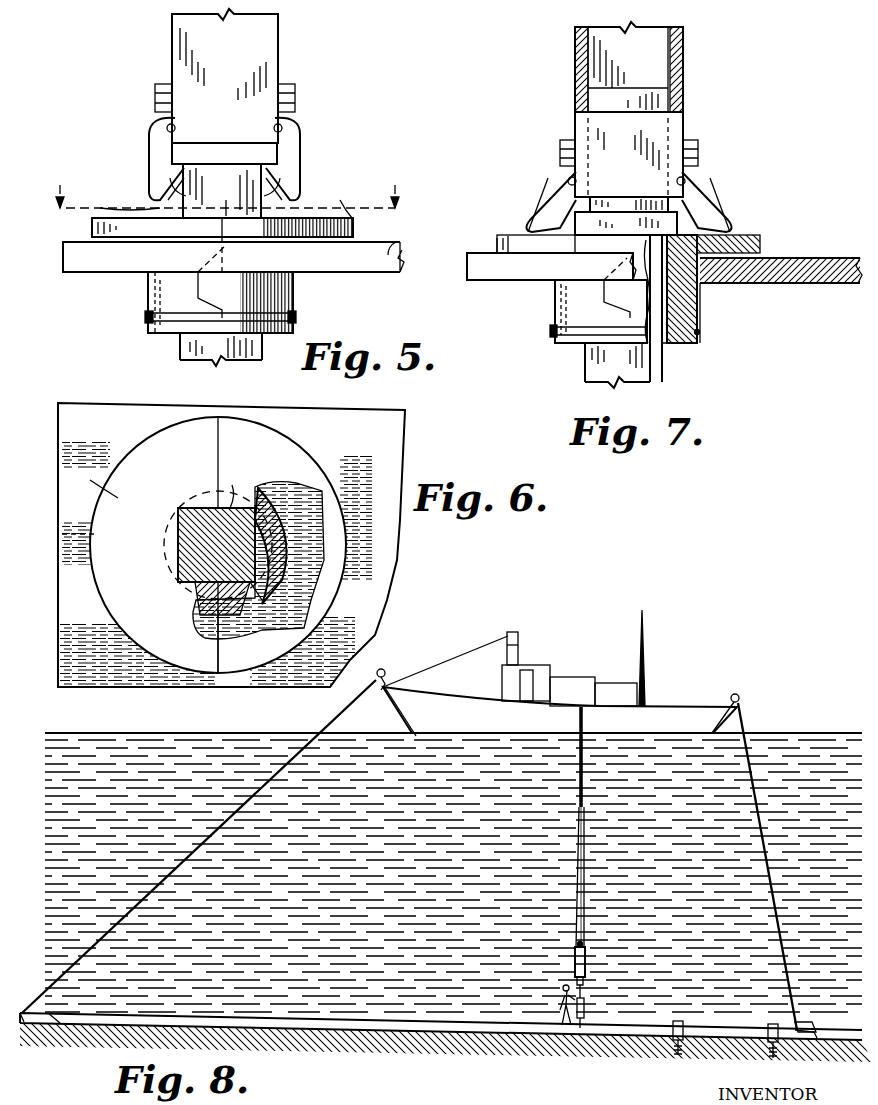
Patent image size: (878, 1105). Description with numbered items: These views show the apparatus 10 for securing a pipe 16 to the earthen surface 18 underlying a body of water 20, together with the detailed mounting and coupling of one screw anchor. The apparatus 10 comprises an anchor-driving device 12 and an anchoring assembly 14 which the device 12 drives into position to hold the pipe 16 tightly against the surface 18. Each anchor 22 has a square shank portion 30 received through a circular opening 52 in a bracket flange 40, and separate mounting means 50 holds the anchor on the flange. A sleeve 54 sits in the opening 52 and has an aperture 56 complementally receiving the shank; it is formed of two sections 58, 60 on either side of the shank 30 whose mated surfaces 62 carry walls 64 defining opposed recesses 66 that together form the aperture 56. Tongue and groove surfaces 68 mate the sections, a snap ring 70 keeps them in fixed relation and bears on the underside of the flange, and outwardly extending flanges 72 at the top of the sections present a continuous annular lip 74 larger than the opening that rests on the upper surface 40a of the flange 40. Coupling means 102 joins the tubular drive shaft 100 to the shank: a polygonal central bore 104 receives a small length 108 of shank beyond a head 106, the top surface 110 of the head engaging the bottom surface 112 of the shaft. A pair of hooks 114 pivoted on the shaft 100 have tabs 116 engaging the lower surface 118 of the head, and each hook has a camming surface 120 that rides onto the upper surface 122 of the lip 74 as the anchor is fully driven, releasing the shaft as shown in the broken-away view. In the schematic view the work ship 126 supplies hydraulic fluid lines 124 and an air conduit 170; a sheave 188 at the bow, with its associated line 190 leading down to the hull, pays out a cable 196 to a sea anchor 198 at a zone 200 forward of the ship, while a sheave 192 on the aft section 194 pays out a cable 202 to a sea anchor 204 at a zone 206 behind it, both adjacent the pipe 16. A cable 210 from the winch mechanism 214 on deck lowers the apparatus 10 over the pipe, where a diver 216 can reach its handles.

In FIG. 8, the apparatus 10 is at (592, 950).
In FIG. 8, the anchor-driving device 12 is at (598, 978).
In FIG. 8, the anchoring assembly 14 is at (595, 1022).
In FIG. 8, the pipe 16 is at (340, 1020).
In FIG. 8, the earthen surface 18 is at (446, 1042).
In FIG. 8, the body of water 20 is at (210, 734).
In FIG. 5, the anchor 22 is at (248, 252).
In FIG. 7, the anchor 22 is at (664, 378).
In FIG. 6, the anchor 22 is at (186, 500).
In FIG. 5, the shank portion 30 is at (140, 205).
In FIG. 7, the shank portion 30 is at (683, 100).
In FIG. 5, the flange 40 is at (62, 262).
In FIG. 6, the flange 40 is at (383, 425).
In FIG. 5, the upper surface of flange 40a is at (392, 239).
In FIG. 7, the upper surface of flange 40a is at (810, 260).
In FIG. 6, the upper surface of flange 40a is at (340, 482).
In FIG. 5, the mounting means 50 is at (408, 190).
In FIG. 7, the mounting means 50 is at (740, 335).
In FIG. 6, the mounting means 50 is at (78, 649).
In FIG. 5, the circular opening 52 is at (146, 280).
In FIG. 7, the circular opening 52 is at (700, 292).
In FIG. 6, the circular opening 52 is at (283, 580).
In FIG. 5, the sleeve 54 is at (293, 292).
In FIG. 7, the sleeve 54 is at (556, 305).
In FIG. 6, the sleeve 54 is at (285, 520).
In FIG. 5, the aperture 56 is at (270, 345).
In FIG. 7, the aperture 56 is at (697, 340).
In FIG. 6, the aperture 56 is at (178, 542).
In FIG. 5, the sleeve section 58 is at (160, 338).
In FIG. 7, the sleeve section 58 is at (555, 348).
In FIG. 6, the sleeve section 58 is at (135, 460).
In FIG. 5, the sleeve section 60 is at (296, 325).
In FIG. 7, the sleeve section 60 is at (617, 366).
In FIG. 6, the sleeve section 60 is at (305, 455).
In FIG. 5, the mated surfaces 62 is at (200, 298).
In FIG. 7, the mated surfaces 62 is at (606, 312).
In FIG. 6, the mated surfaces 62 is at (218, 655).
In FIG. 7, the walls 64 is at (697, 315).
In FIG. 6, the walls 64 is at (237, 485).
In FIG. 7, the recess 66 is at (664, 352).
In FIG. 6, the recess 66 is at (178, 565).
In FIG. 5, the tongue and groove surfaces 68 is at (205, 285).
In FIG. 7, the tongue and groove surfaces 68 is at (605, 292).
In FIG. 5, the snap ring 70 is at (147, 316).
In FIG. 7, the snap ring 70 is at (550, 330).
In FIG. 6, the outwardly extending flanges 72 is at (358, 572).
In FIG. 5, the annular lip 74 is at (90, 228).
In FIG. 5, the drive shaft 100 is at (260, 48).
In FIG. 7, the drive shaft 100 is at (683, 58).
In FIG. 5, the coupling means 102 is at (142, 140).
In FIG. 7, the coupling means 102 is at (728, 156).
In FIG. 7, the central bore 104 is at (655, 36).
In FIG. 5, the head 106 is at (188, 150).
In FIG. 7, the head 106 is at (615, 228).
In FIG. 7, the small length 108 is at (600, 100).
In FIG. 5, the top surface of head 110 is at (252, 148).
In FIG. 7, the top surface of head 110 is at (725, 190).
In FIG. 5, the bottom surface of shaft 112 is at (215, 150).
In FIG. 7, the bottom surface of shaft 112 is at (604, 200).
In FIG. 5, the hooks 114 is at (152, 160).
In FIG. 7, the hooks 114 is at (545, 202).
In FIG. 7, the tab 116 is at (560, 160).
In FIG. 5, the lower surface of head 118 is at (215, 170).
In FIG. 7, the lower surface of head 118 is at (605, 262).
In FIG. 5, the camming surface 120 is at (251, 193).
In FIG. 7, the camming surface 120 is at (628, 244).
In FIG. 5, the upper surface of lip 122 is at (359, 197).
In FIG. 7, the upper surface of lip 122 is at (503, 228).
In FIG. 6, the upper surface of lip 122 is at (94, 544).
In FIG. 8, the hydraulic fluid lines 124 is at (584, 858).
In FIG. 8, the work ship 126 is at (662, 707).
In FIG. 8, the conduit 170 is at (579, 807).
In FIG. 8, the sheave 188 is at (385, 672).
In FIG. 8, the line 190 is at (385, 700).
In FIG. 8, the sheave 192 is at (740, 696).
In FIG. 8, the aft section 194 is at (720, 690).
In FIG. 8, the cable 196 is at (336, 718).
In FIG. 8, the sea anchor 198 is at (65, 1030).
In FIG. 8, the zone 200 is at (26, 1030).
In FIG. 8, the cable 202 is at (752, 722).
In FIG. 8, the sea anchor 204 is at (808, 1040).
In FIG. 8, the zone 206 is at (806, 1015).
In FIG. 8, the cable 210 is at (586, 830).
In FIG. 8, the winch mechanism 214 is at (572, 708).
In FIG. 8, the diver 216 is at (555, 1010).